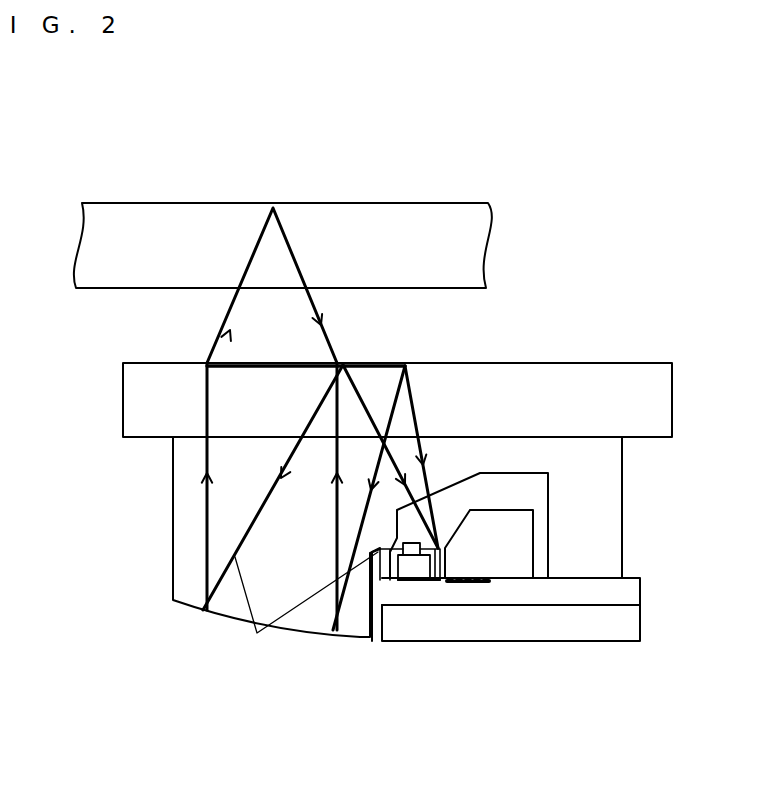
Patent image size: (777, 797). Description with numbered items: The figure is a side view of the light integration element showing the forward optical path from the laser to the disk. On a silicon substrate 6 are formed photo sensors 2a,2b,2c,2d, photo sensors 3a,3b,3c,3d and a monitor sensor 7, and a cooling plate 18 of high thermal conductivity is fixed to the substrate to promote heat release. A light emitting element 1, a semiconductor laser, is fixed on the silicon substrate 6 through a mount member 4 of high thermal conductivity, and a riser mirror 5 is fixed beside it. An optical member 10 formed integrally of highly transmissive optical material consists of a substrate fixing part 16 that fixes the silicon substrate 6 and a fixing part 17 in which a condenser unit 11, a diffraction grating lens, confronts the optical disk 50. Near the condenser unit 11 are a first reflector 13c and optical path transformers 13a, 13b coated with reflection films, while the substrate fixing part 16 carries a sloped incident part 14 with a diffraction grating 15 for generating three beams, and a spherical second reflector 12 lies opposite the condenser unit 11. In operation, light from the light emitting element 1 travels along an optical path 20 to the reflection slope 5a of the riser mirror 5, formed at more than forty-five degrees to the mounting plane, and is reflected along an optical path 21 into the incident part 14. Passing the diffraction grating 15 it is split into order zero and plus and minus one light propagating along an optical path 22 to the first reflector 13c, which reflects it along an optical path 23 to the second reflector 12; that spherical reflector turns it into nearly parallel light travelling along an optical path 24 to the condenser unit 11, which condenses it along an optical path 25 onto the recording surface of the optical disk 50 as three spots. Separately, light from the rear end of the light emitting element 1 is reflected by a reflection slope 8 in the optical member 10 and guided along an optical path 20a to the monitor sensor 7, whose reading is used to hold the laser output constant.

The light emitting element 1 is at (420, 598).
The photo sensors 2a,2b,2c,2d is at (453, 585).
The photo sensors 3a,3b,3c,3d is at (475, 585).
The mount member 4 is at (408, 582).
The riser mirror 5 is at (527, 552).
The reflection slope 5a is at (458, 530).
The silicon substrate 6 is at (633, 590).
The monitor sensor 7 is at (388, 600).
The reflection slope 8 is at (380, 553).
The optical member 10 is at (140, 621).
The condenser unit 11 is at (255, 363).
The second reflector 12 is at (232, 620).
The optical path transformer 13a is at (355, 362).
The optical path transformer 13b is at (385, 363).
The first reflector 13c is at (395, 363).
The incident part 14 is at (483, 473).
The diffraction grating for generating three beams 15 is at (433, 483).
The substrate fixing part 16 is at (608, 522).
The fixing part 17 is at (588, 380).
The cooling plate 18 is at (628, 620).
The optical path 20 is at (437, 582).
The optical path 20a is at (371, 612).
The optical path 21 is at (432, 512).
The optical path 22 is at (425, 392).
The optical path 23 is at (306, 608).
The optical path 24 is at (337, 617).
The optical path 25 is at (322, 328).
The optical disk 50 is at (150, 214).